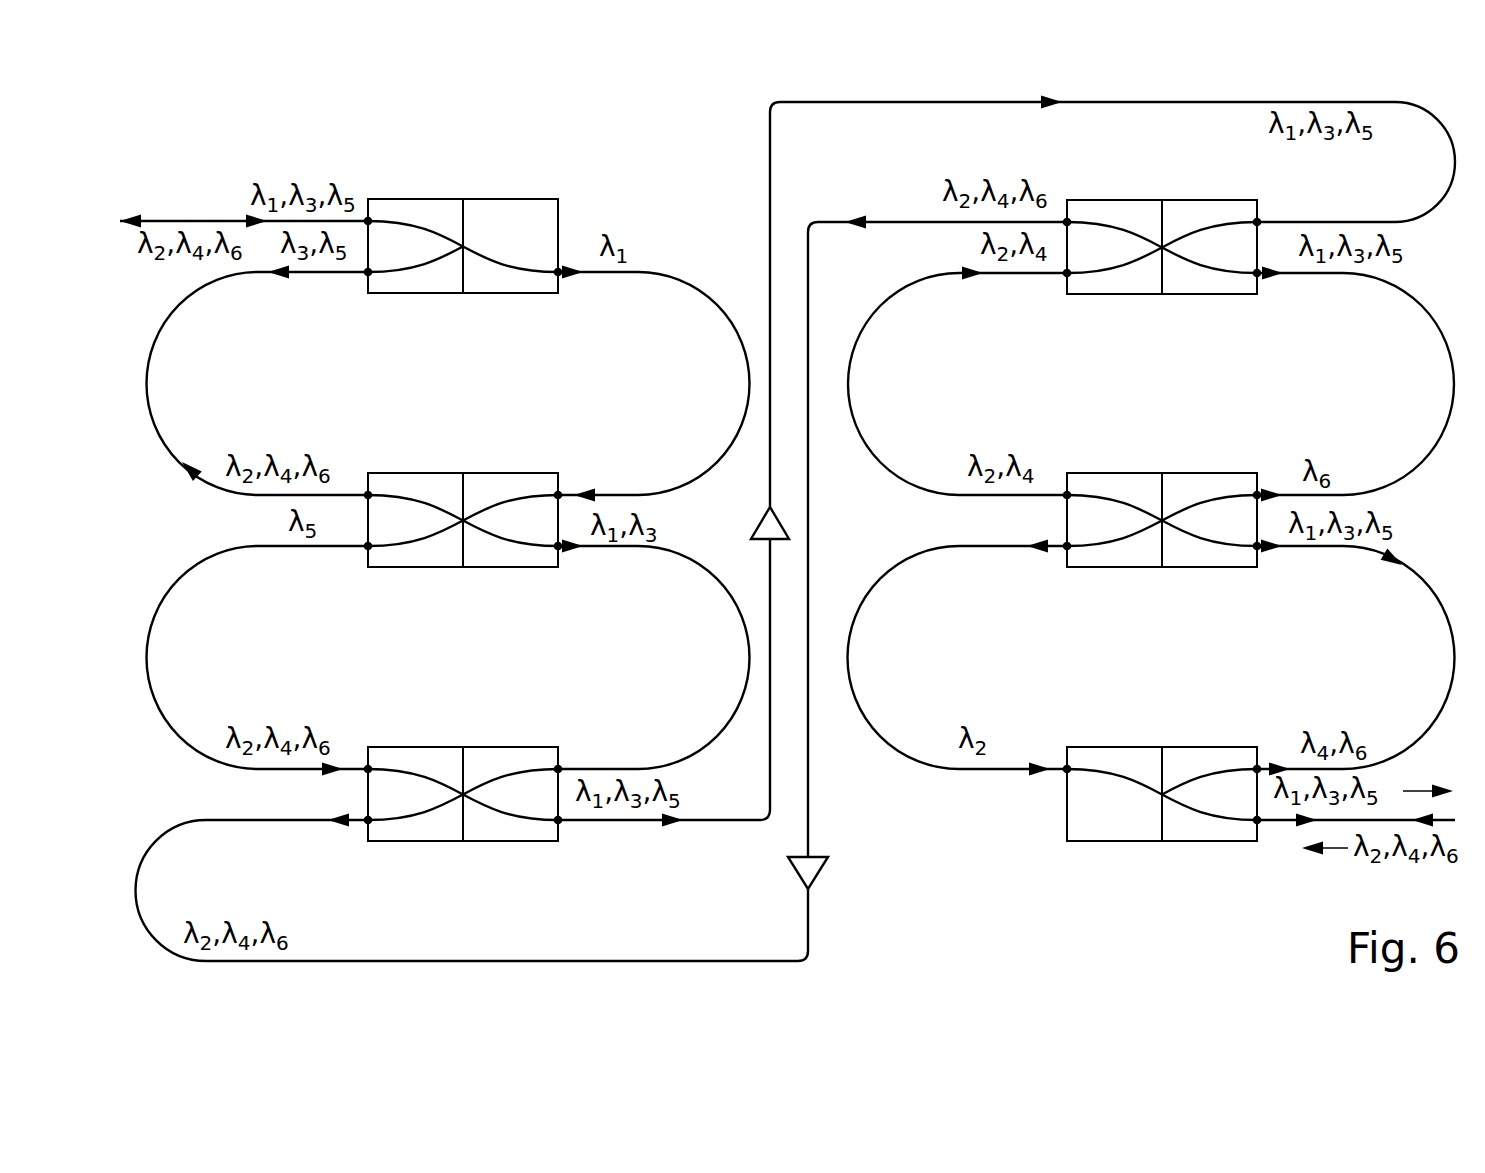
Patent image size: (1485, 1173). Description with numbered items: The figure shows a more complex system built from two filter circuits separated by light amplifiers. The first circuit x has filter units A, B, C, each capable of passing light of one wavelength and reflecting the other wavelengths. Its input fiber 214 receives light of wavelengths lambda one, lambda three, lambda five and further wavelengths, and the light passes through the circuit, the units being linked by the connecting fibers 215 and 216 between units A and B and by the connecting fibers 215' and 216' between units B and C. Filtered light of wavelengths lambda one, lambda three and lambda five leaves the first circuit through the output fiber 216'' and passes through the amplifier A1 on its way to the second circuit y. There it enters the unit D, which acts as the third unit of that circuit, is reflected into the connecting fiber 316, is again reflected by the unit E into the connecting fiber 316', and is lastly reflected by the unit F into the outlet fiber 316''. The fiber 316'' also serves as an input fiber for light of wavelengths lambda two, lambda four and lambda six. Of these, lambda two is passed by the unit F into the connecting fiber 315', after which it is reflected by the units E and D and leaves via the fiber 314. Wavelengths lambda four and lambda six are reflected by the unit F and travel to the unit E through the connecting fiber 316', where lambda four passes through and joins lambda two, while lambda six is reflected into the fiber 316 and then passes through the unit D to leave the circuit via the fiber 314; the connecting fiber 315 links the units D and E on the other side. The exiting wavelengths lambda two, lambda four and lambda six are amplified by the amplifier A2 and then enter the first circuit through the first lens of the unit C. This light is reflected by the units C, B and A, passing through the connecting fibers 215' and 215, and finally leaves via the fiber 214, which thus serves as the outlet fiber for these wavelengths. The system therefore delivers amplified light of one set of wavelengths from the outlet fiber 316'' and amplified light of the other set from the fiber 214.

The input fiber 214 is at (184, 221).
The connecting fiber 215 is at (257, 381).
The connecting fiber 216 is at (654, 384).
The connecting fiber 215' is at (257, 661).
The connecting fiber 216' is at (654, 655).
The output fiber 216'' is at (1006, 494).
The fiber 314 is at (885, 220).
The connecting fiber 315 is at (957, 381).
The connecting fiber 316 is at (1355, 384).
The connecting fiber 315' is at (958, 658).
The connecting fiber 316' is at (1356, 658).
The outlet fiber 316'' is at (1316, 854).
The filter unit A is at (483, 187).
The filter unit B is at (478, 457).
The filter unit C is at (478, 733).
The unit D is at (1180, 190).
The unit E is at (1173, 463).
The unit F is at (1177, 737).
The amplifier A1 is at (765, 520).
The amplifier A2 is at (813, 857).
The first circuit x is at (608, 202).
The second circuit y is at (758, 175).